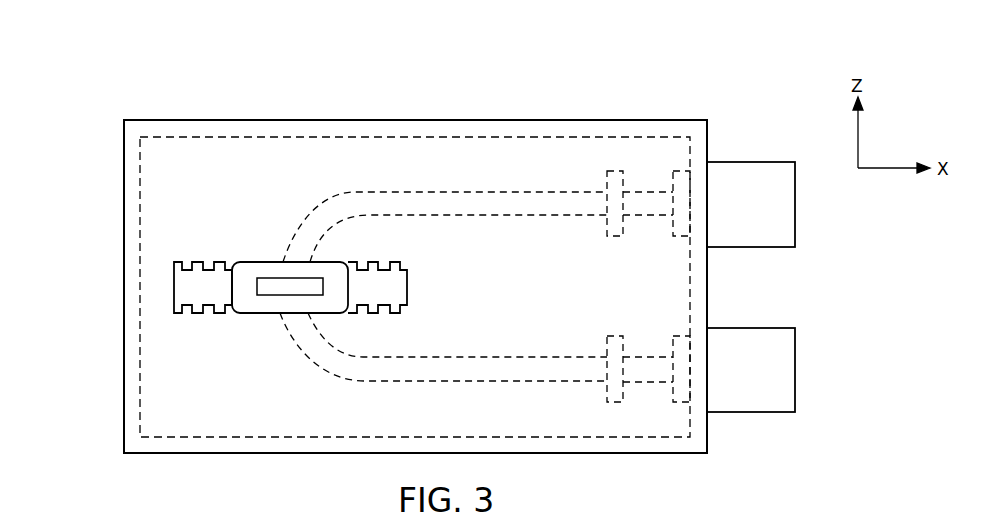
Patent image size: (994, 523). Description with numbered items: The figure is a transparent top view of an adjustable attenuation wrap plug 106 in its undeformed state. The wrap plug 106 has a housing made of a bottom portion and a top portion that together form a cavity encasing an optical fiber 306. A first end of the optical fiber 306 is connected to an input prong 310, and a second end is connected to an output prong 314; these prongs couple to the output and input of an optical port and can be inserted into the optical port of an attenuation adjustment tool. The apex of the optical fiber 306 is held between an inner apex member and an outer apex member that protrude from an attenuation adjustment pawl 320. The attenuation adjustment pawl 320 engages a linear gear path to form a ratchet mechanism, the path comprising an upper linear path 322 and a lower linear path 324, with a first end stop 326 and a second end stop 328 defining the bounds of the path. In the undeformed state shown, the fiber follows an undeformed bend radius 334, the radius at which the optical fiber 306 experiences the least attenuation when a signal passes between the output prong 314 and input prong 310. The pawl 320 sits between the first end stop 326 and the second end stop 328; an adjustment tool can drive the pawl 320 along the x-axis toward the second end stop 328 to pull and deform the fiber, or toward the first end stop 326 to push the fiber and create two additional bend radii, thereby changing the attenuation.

The adjustable attenuation wrap plug 106 is at (148, 62).
The optical fiber 306 is at (456, 286).
The input prong 310 is at (771, 215).
The output prong 314 is at (771, 381).
The attenuation adjustment pawl 320 is at (267, 303).
The upper linear path 322 is at (197, 262).
The lower linear path 324 is at (197, 313).
The first end stop 326 is at (407, 287).
The second end stop 328 is at (146, 287).
The undeformed bend radius 334 is at (315, 212).